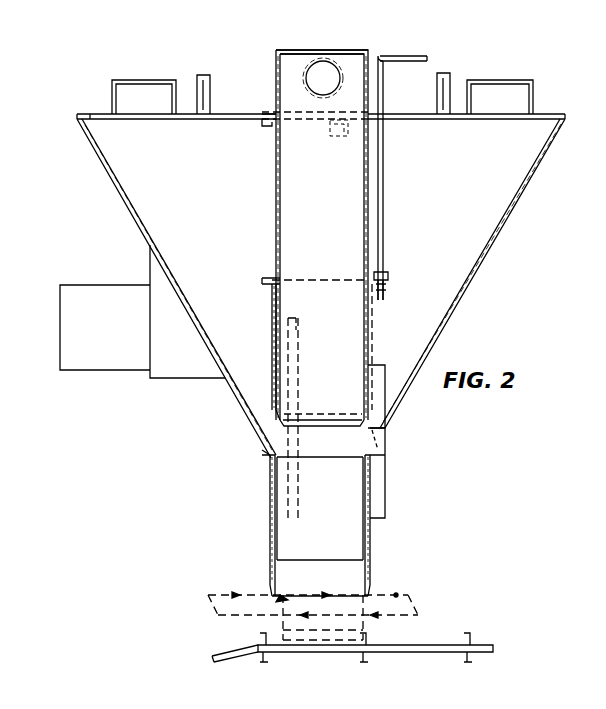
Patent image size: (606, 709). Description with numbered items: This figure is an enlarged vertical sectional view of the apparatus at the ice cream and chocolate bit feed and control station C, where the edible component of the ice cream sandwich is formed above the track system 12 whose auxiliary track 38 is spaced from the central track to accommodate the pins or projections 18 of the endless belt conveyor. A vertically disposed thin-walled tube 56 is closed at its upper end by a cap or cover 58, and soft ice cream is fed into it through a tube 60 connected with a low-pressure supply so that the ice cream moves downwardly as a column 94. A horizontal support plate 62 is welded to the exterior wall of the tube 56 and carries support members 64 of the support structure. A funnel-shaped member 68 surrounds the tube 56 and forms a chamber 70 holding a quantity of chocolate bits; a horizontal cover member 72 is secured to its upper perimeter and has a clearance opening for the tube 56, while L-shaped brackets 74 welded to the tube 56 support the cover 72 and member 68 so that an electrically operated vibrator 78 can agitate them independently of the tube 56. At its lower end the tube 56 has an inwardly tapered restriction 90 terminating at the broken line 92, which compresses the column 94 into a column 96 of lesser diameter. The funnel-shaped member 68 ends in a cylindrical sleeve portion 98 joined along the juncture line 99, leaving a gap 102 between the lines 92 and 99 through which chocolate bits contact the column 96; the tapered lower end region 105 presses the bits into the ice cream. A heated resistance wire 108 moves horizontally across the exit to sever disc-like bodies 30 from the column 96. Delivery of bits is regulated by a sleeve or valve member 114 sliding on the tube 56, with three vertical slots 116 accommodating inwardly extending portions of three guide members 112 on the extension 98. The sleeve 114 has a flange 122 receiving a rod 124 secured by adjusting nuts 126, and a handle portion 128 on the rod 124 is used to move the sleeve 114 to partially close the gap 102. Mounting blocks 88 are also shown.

The track system 12 is at (218, 654).
The pins or projections 18 is at (258, 640).
The sections or disc-like bodies 30 is at (265, 595).
The auxiliary track 38 is at (490, 645).
The tube 56 is at (276, 170).
The cap or cover 58 is at (300, 50).
The tube 60 is at (308, 74).
The support plate 62 is at (268, 112).
The support means or members 64 is at (197, 90).
The funnel-shaped member 68 is at (510, 212).
The chamber 70 is at (226, 231).
The cover member 72 is at (92, 114).
The L-shaped brackets 74 is at (262, 126).
The vibrator 78 is at (110, 290).
The mounting blocks 88 is at (112, 90).
The inwardly tapered restriction 90 is at (386, 428).
The broken line 92 is at (338, 422).
The column 94 is at (340, 219).
The column 96 is at (362, 507).
The sleeve portion 98 is at (270, 475).
The juncture line 99 is at (345, 455).
The gap or space 102 is at (275, 432).
The lower end region 105 is at (370, 565).
The resistance wire 108 is at (396, 595).
The guide members 112 is at (288, 360).
The sleeve or valve member 114 is at (272, 305).
The vertical slots 116 is at (300, 330).
The flange 122 is at (266, 278).
The rod 124 is at (383, 200).
The adjusting nuts 126 is at (388, 280).
The handle portion 128 is at (415, 36).
The ice cream and chocolate bit feed and control station C is at (254, 518).